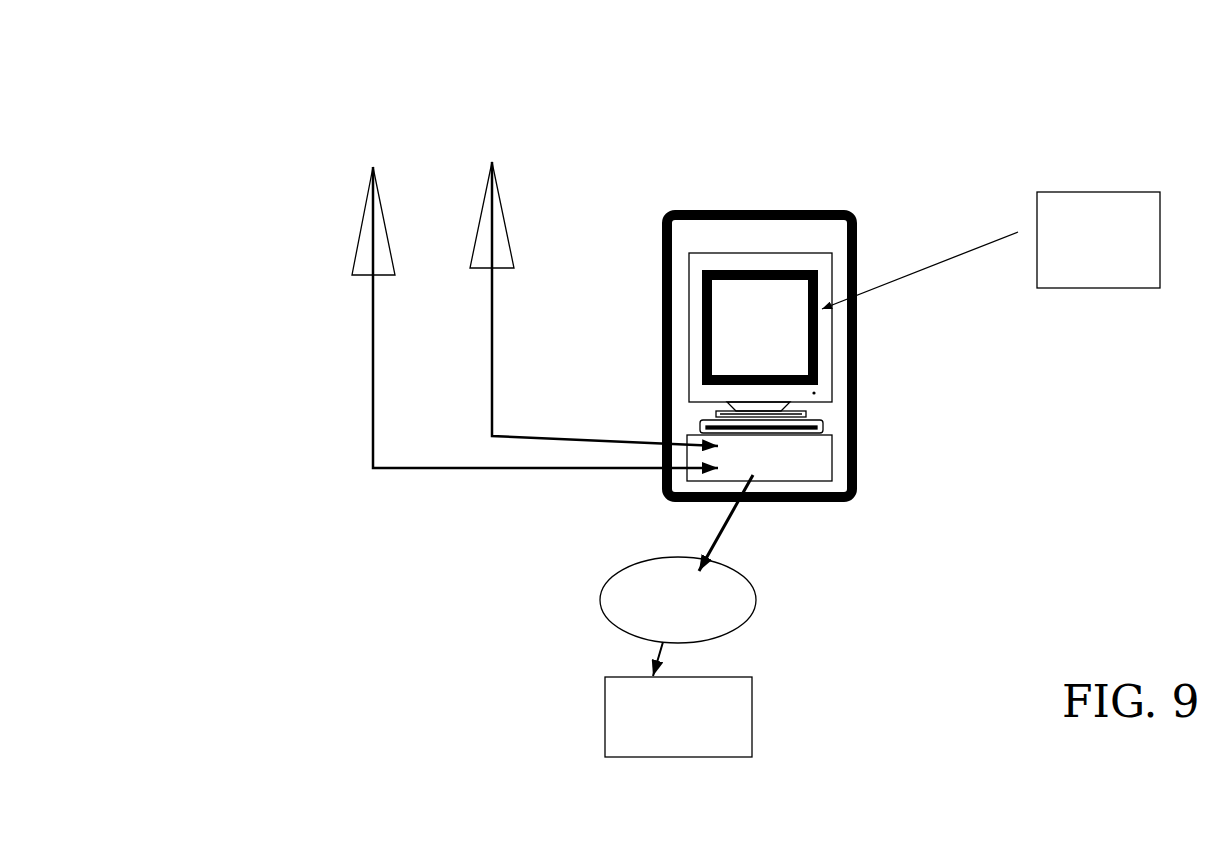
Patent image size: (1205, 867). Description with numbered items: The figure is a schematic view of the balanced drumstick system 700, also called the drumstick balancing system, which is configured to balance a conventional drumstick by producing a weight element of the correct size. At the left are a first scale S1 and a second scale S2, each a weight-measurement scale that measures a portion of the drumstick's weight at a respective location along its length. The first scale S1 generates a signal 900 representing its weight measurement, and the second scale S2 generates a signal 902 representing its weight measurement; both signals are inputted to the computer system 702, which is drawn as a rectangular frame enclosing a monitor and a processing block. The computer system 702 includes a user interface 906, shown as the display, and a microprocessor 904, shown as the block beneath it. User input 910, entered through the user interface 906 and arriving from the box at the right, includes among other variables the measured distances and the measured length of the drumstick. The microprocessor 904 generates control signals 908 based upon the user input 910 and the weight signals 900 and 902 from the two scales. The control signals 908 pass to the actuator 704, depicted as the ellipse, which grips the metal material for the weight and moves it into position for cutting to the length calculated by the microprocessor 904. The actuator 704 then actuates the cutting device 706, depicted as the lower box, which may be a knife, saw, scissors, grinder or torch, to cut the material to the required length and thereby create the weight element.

The balanced drumstick system 700 is at (845, 47).
The computer system 702 is at (686, 205).
The actuator 704 is at (620, 597).
The cutting device 706 is at (603, 707).
The signal 900 is at (371, 369).
The signal 902 is at (495, 366).
The microprocessor 904 is at (797, 468).
The user interface 906 is at (781, 307).
The control signals 908 is at (718, 530).
The user input 910 is at (921, 274).
The first scale S1 is at (371, 259).
The second scale S2 is at (481, 212).